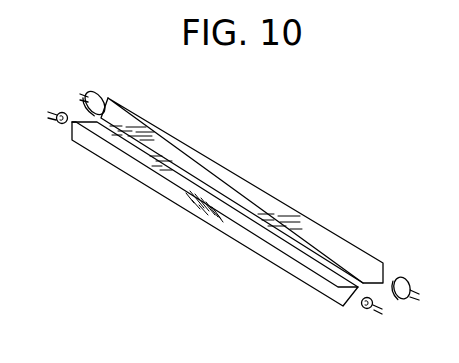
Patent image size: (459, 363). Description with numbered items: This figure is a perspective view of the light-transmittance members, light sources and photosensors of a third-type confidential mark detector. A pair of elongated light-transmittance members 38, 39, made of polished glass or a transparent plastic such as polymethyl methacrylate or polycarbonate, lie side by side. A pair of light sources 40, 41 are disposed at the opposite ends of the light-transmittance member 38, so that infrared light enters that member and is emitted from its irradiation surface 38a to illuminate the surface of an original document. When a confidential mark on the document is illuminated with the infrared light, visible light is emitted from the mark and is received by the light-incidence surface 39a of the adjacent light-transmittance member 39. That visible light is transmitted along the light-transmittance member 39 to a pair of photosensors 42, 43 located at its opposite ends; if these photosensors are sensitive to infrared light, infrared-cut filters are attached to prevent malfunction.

The light-transmittance member 38 is at (243, 224).
The irradiation surface 38a is at (170, 177).
The light-transmittance member 39 is at (258, 192).
The light-incidence surface 39a is at (175, 147).
The light source 40 is at (363, 310).
The light source 41 is at (58, 124).
The photosensor 42 is at (402, 275).
The photosensor 43 is at (100, 97).